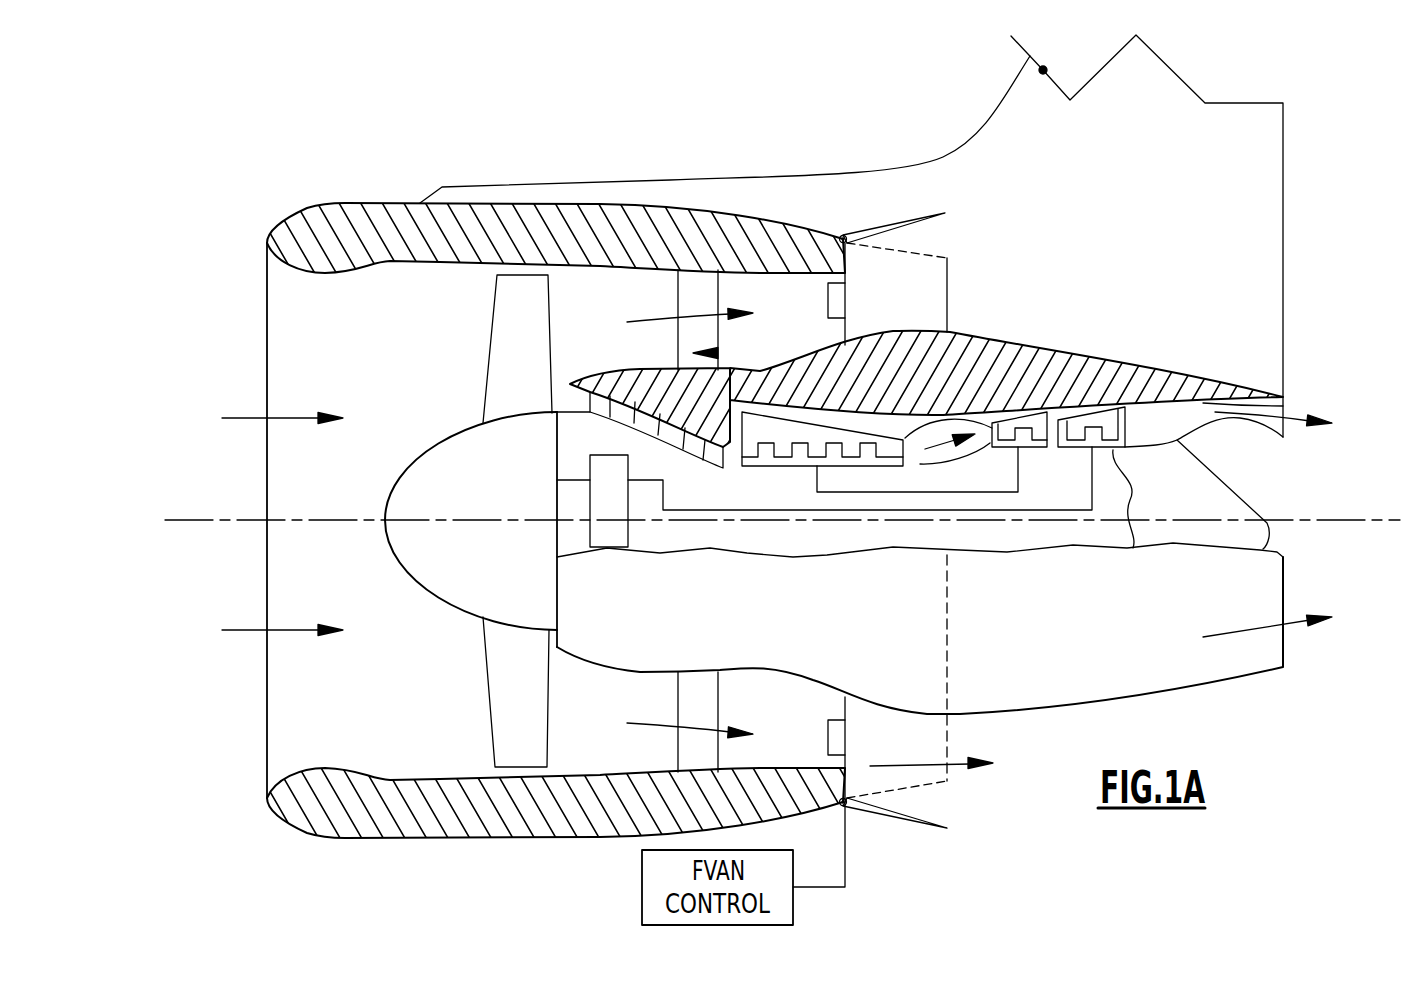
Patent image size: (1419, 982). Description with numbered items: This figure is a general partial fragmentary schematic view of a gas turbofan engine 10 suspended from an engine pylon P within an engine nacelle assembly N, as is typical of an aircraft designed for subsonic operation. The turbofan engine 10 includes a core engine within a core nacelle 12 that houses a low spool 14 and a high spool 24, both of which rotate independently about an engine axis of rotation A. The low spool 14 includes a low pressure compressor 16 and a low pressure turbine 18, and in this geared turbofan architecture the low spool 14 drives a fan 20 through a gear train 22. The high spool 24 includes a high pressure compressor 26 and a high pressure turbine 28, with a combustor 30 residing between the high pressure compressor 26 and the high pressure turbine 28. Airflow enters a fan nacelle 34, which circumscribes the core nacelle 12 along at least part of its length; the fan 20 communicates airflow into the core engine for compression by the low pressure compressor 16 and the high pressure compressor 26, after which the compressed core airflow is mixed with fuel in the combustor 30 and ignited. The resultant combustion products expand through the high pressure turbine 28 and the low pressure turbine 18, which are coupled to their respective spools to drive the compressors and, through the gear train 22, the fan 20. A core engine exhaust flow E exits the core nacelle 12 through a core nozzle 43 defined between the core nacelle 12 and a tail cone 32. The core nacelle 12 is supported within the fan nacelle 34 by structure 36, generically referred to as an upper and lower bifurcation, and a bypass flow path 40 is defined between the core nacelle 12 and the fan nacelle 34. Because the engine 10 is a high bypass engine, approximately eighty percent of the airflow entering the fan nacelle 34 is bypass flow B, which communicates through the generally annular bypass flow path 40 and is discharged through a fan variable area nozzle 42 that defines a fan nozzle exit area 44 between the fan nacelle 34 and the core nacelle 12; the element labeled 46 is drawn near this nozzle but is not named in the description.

The gas turbofan engine 10 is at (330, 155).
The core nacelle 12 is at (1103, 368).
The low spool 14 is at (885, 511).
The low pressure compressor 16 is at (697, 456).
The low pressure turbine 18 is at (1115, 448).
The fan 20 is at (503, 692).
The gear train 22 is at (607, 520).
The high spool 24 is at (857, 494).
The high pressure compressor 26 is at (790, 452).
The high pressure turbine 28 is at (1040, 447).
The combustor 30 is at (958, 455).
The tail cone 32 is at (1220, 493).
The fan nacelle 34 is at (587, 223).
The structure 36 is at (710, 352).
The bypass flow path 40 is at (605, 309).
The fan variable area nozzle 42 is at (903, 255).
The core nozzle 43 is at (1273, 404).
The fan nozzle exit area 44 is at (947, 297).
The flap assembly 46 is at (858, 213).
The engine nacelle assembly N is at (670, 204).
The engine pylon P is at (1253, 209).
The engine axis of rotation A is at (1350, 522).
The core engine exhaust flow E is at (1293, 628).
The bypass flow B is at (653, 722).